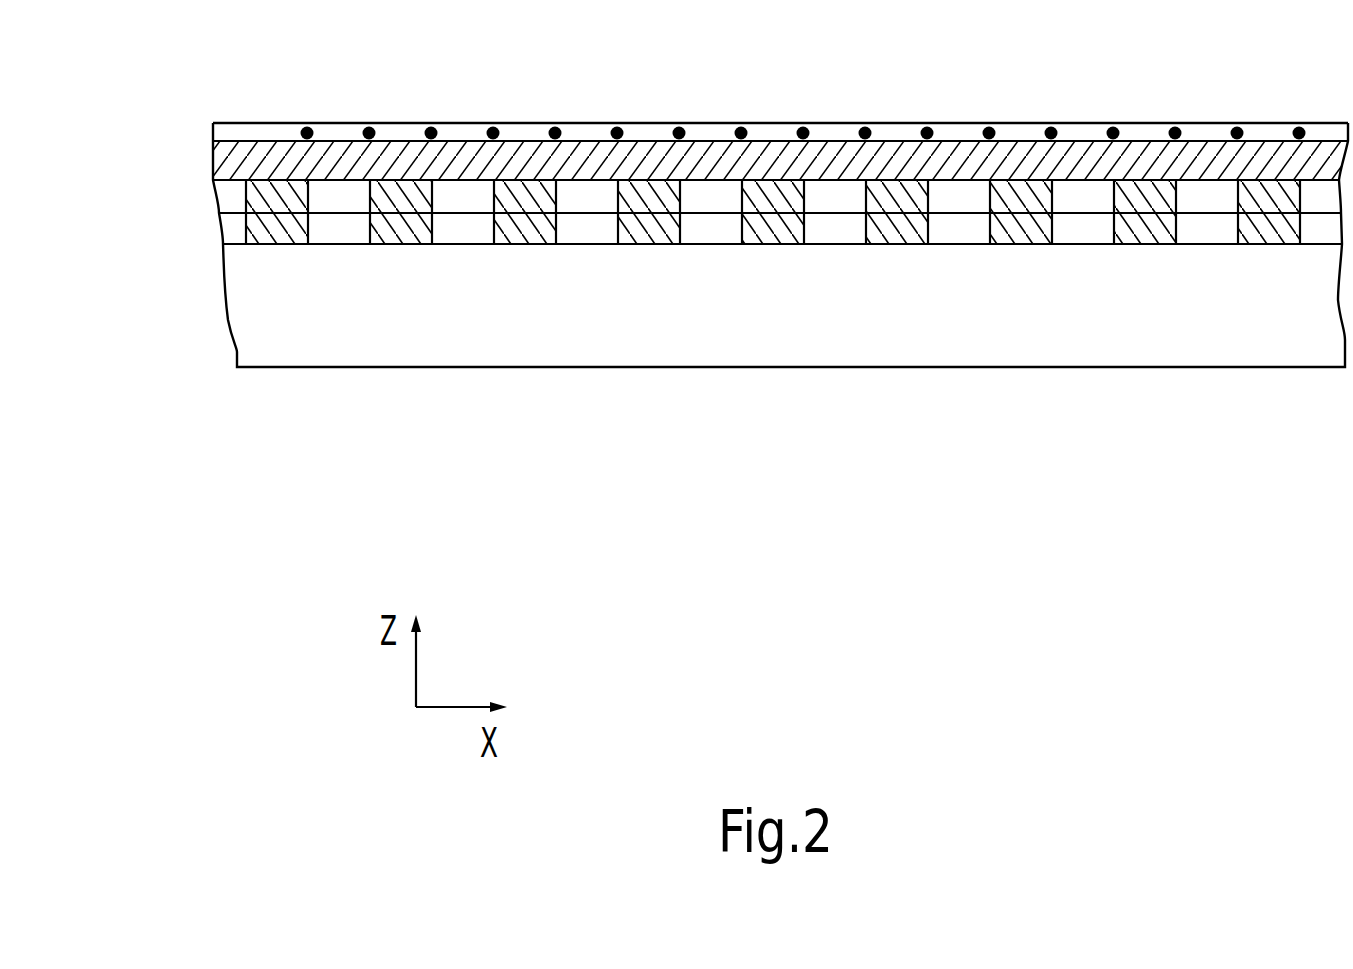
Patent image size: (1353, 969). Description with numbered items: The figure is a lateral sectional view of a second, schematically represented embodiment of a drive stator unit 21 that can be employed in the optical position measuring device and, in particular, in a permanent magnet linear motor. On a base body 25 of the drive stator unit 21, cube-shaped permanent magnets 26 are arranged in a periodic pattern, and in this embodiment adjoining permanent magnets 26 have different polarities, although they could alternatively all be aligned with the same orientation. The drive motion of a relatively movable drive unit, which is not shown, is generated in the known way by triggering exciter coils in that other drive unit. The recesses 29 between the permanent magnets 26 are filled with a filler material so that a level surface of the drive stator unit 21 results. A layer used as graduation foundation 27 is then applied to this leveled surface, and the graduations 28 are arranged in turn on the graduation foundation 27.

The drive stator unit 21 is at (720, 248).
The base body 25 is at (1262, 343).
The permanent magnets 26 is at (1222, 193).
The graduation foundation 27 is at (235, 165).
The graduations 28 is at (337, 132).
The recesses 29 is at (1021, 212).